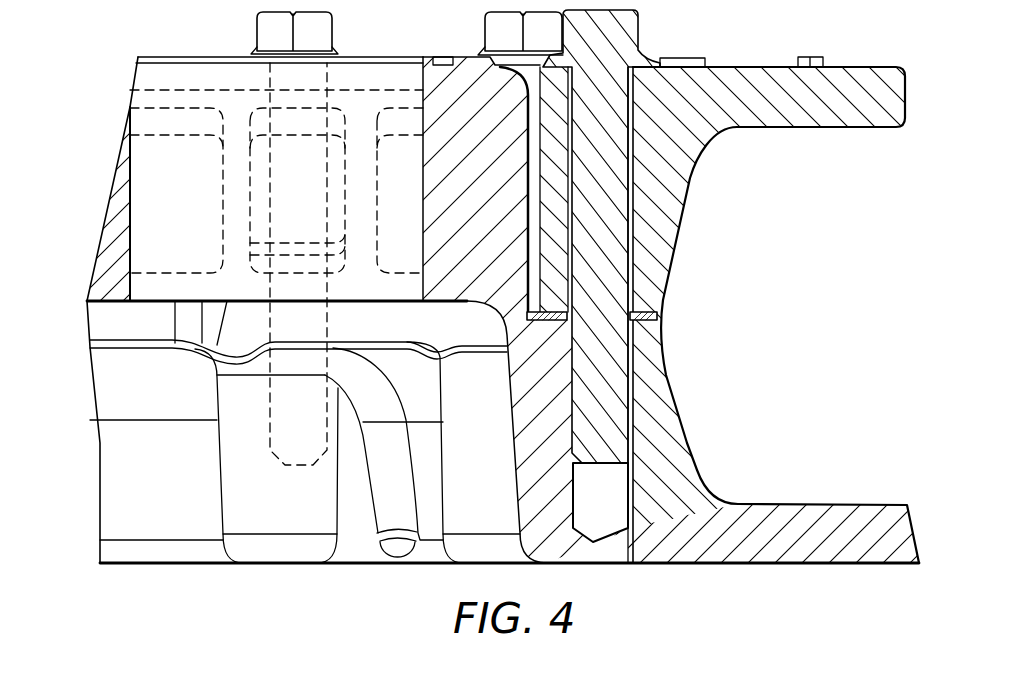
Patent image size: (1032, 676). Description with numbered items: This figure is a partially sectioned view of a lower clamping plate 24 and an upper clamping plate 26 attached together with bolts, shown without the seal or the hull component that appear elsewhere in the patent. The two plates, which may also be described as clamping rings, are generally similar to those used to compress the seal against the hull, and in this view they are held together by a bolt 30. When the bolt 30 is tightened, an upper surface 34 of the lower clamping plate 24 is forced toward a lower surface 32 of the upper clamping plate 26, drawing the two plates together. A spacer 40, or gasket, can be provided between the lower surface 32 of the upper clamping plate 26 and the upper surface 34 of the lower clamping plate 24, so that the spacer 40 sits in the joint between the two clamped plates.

The lower clamping plate 24 is at (130, 493).
The upper clamping plate 26 is at (177, 80).
The bolt 30 is at (625, 35).
The lower surface of the upper clamping plate 32 is at (667, 352).
The upper surface of the lower clamping plate 34 is at (645, 300).
The spacer 40 is at (657, 317).